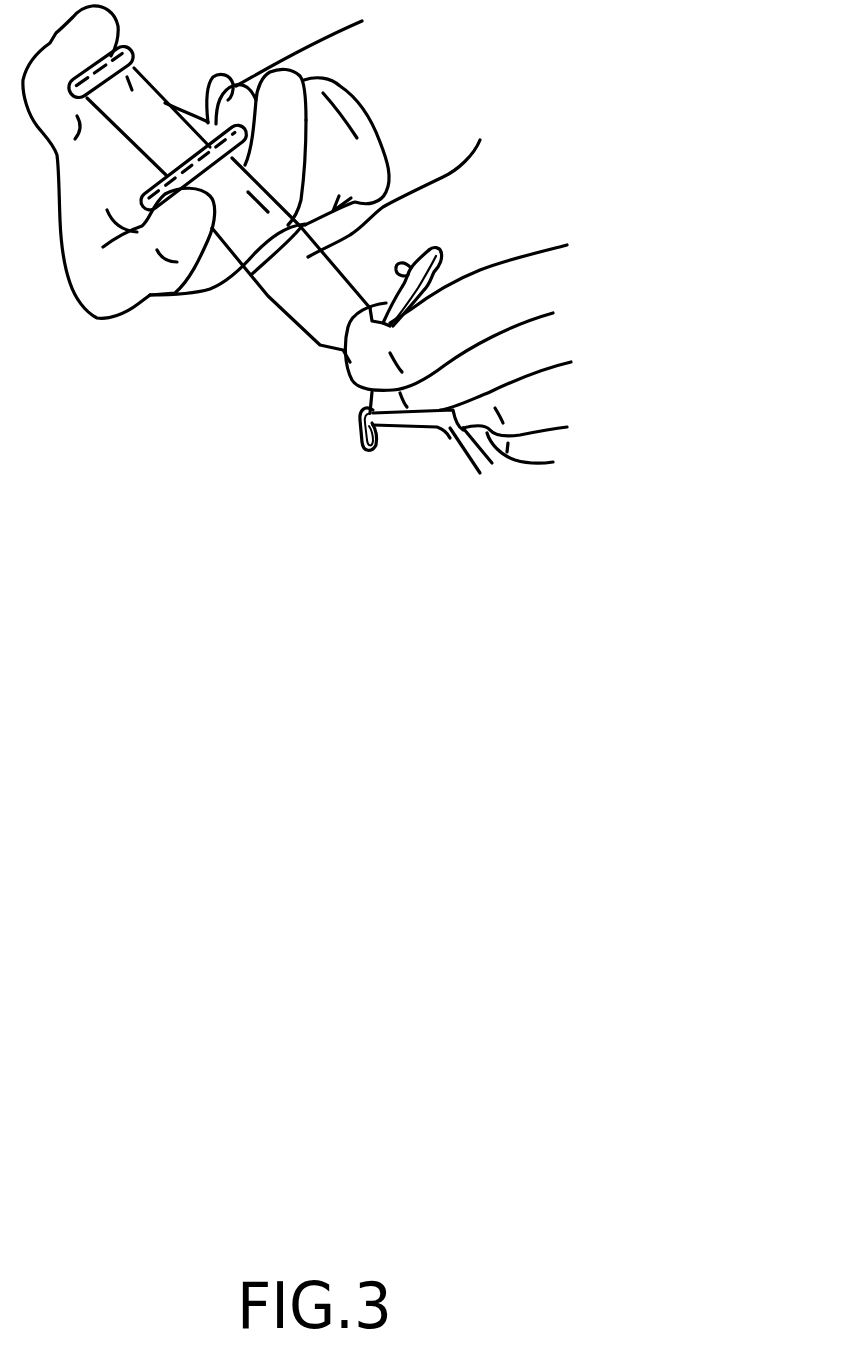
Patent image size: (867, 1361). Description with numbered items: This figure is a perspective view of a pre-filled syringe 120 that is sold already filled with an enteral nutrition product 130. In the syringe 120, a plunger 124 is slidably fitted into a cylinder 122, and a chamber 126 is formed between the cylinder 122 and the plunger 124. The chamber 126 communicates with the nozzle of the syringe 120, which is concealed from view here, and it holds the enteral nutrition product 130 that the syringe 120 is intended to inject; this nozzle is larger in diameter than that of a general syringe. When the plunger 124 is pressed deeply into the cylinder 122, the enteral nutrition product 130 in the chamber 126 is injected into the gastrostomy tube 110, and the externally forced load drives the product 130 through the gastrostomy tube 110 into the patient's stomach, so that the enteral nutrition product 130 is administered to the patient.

The gastrostomy tube 110 is at (444, 472).
The syringe 120 is at (274, 341).
The cylinder 122 is at (215, 227).
The plunger 124 is at (130, 88).
The chamber 126 is at (325, 292).
The enteral nutrition product 130 is at (349, 308).